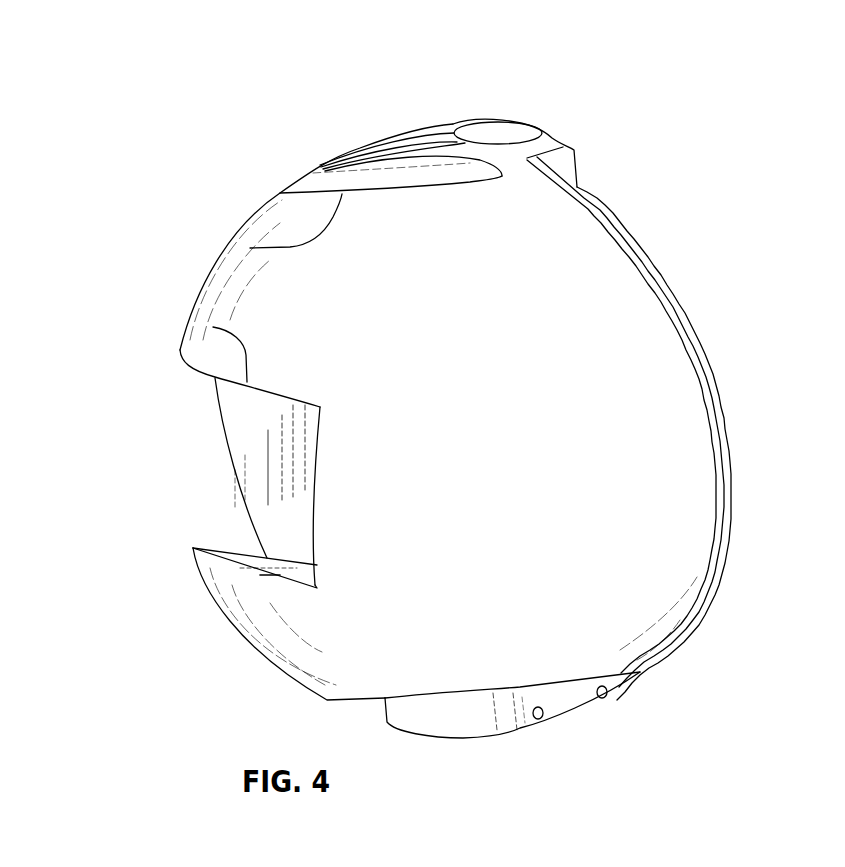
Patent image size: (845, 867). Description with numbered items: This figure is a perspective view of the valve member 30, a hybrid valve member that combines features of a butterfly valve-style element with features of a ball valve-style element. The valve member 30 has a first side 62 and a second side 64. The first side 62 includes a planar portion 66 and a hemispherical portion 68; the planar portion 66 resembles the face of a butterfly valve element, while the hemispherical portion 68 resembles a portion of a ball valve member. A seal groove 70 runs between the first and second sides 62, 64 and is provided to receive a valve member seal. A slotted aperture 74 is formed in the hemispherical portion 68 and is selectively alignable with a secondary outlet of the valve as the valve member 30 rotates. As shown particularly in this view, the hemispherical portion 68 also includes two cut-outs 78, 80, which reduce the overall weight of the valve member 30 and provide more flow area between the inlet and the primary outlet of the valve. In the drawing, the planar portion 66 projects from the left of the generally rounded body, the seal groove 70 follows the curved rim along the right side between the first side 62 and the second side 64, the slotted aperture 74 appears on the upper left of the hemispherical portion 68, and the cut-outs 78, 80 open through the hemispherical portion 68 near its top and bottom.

The valve member 30 is at (478, 88).
The first side 62 is at (192, 204).
The second side 64 is at (762, 343).
The planar portion 66 is at (242, 458).
The hemispherical portion 68 is at (665, 476).
The seal groove 70 is at (582, 210).
The slotted aperture 74 is at (213, 327).
The cut-out 78 is at (250, 248).
The cut-out 80 is at (385, 702).